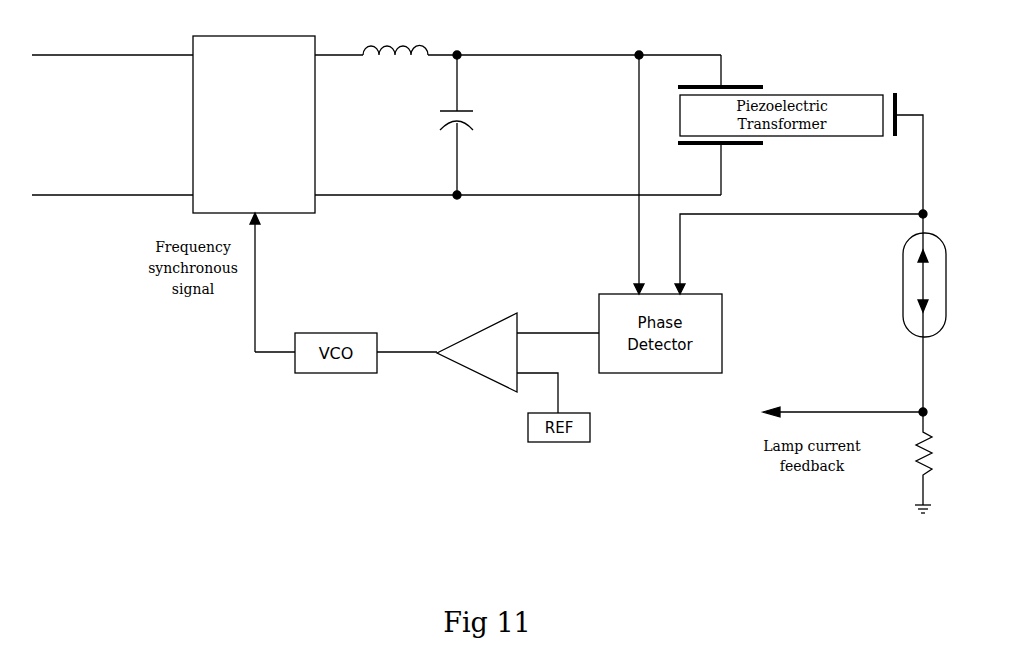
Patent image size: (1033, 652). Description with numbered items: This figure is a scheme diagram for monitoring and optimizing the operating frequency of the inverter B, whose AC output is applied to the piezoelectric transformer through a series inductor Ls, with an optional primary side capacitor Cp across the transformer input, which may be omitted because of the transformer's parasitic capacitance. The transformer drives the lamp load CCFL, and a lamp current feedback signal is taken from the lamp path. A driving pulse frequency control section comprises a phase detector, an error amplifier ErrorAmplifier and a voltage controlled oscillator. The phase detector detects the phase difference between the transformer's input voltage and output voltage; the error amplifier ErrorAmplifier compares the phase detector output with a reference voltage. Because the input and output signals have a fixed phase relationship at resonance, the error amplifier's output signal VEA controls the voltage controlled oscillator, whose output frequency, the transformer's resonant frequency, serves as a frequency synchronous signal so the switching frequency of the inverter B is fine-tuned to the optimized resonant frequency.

The inverter B is at (254, 124).
The series inductor Ls is at (377, 37).
The primary side capacitor Cp is at (475, 125).
The cold cathode fluorescent lamp CCFL is at (893, 285).
The error amplifier output signal VEA is at (412, 358).
The error amplifier ErrorAmplifier is at (480, 338).